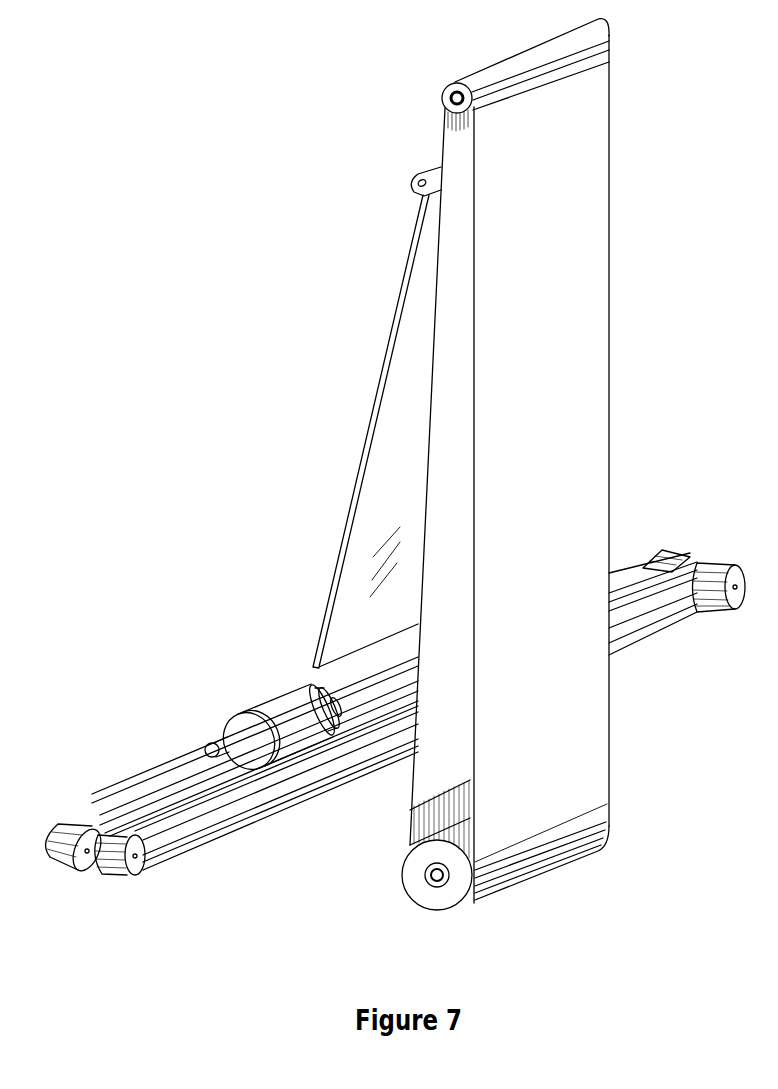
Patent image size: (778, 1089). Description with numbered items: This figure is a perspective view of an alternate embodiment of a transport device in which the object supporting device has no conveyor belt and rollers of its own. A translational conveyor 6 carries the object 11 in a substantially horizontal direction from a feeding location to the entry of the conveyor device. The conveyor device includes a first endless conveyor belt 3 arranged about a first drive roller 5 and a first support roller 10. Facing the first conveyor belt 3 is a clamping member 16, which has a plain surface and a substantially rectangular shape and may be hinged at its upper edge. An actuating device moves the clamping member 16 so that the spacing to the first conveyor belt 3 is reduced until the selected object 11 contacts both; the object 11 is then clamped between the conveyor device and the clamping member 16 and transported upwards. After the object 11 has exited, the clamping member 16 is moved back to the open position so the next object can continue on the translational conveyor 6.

The first conveyor belt 3 is at (592, 362).
The first drive roller 5 is at (440, 893).
The translational conveyor 6 is at (88, 812).
The first support roller 10 is at (478, 96).
The object 11 is at (240, 715).
The clamping member 16 is at (358, 478).